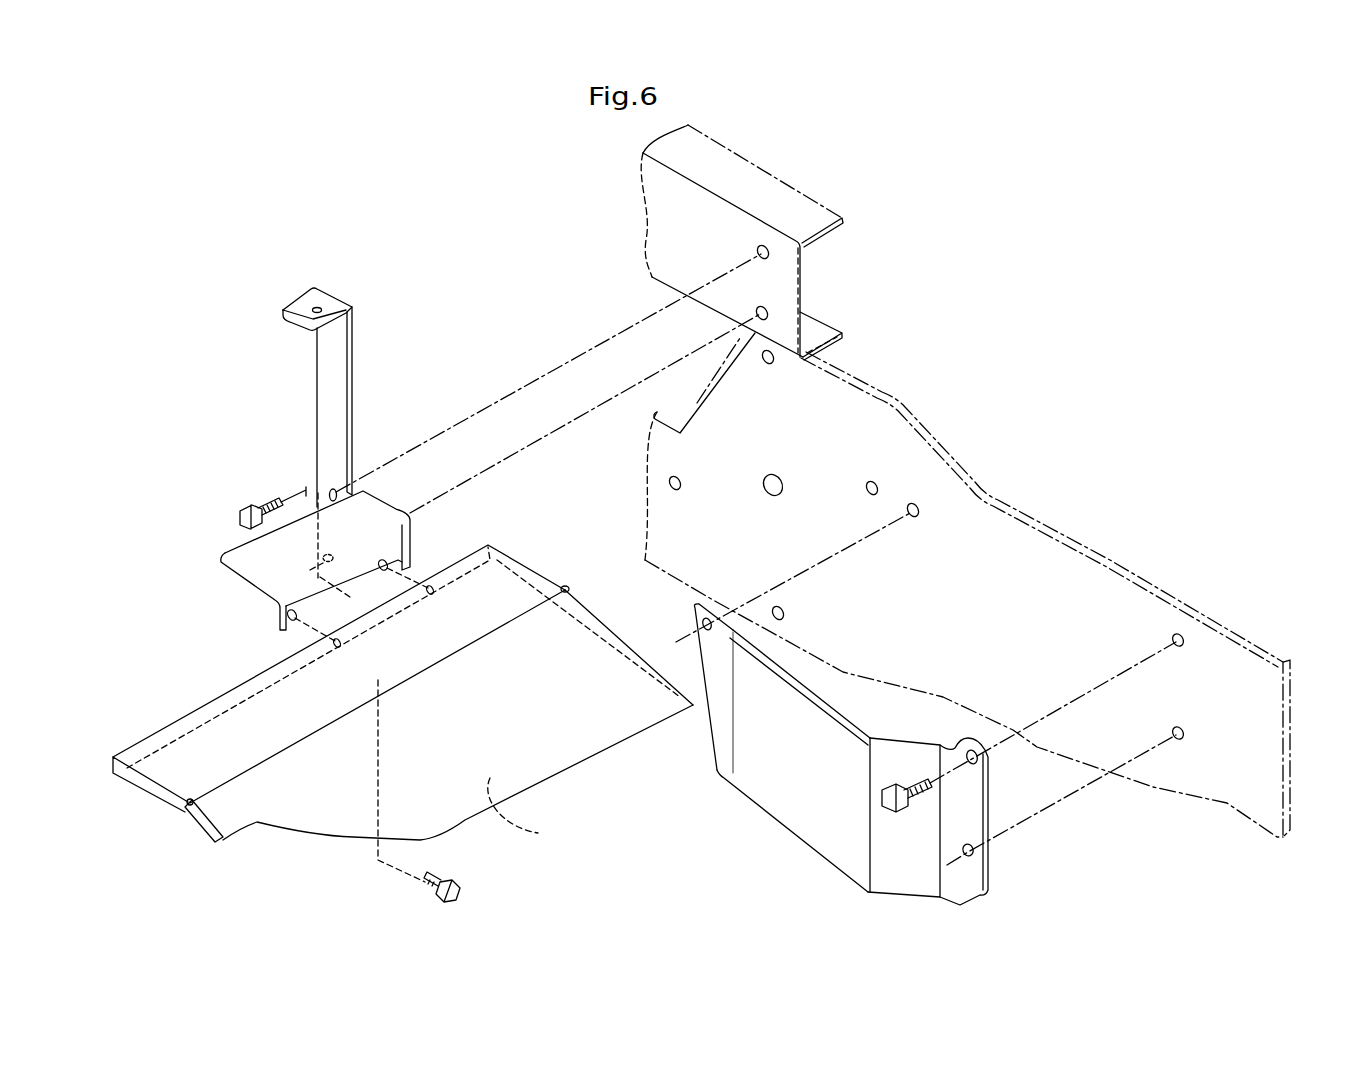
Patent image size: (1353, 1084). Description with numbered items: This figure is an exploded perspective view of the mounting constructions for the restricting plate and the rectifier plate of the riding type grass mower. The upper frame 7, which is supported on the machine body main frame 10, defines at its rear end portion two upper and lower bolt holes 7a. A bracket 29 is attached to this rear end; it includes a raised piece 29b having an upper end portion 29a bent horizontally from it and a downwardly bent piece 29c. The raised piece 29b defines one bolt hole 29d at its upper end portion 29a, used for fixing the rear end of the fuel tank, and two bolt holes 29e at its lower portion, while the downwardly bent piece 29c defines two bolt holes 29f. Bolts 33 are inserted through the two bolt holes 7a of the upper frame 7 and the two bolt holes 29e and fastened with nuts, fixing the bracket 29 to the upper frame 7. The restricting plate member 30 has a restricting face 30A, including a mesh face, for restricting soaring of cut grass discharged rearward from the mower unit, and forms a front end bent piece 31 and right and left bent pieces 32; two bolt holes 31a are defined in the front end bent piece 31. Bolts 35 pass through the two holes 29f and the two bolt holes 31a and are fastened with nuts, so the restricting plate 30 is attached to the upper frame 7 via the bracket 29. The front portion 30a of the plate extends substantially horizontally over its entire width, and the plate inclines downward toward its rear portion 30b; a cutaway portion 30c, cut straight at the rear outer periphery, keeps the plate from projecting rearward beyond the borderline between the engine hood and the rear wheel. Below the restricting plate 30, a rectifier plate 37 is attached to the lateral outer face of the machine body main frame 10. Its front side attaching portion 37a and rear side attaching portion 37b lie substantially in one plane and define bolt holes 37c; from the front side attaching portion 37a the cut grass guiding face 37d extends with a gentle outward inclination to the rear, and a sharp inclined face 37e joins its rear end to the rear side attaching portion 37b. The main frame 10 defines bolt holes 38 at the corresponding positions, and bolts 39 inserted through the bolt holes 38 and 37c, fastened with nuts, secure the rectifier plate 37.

The upper frame 7 is at (757, 242).
The bolt holes 7a is at (759, 258).
The machine body main frame 10 is at (1048, 520).
The bracket 29 is at (448, 456).
The upper end portion 29a is at (302, 300).
The raised piece 29b is at (323, 388).
The downwardly bent piece 29c is at (357, 580).
The bolt hole 29d is at (322, 306).
The bolt holes 29e is at (329, 490).
The bolt holes 29f is at (388, 564).
The restricting plate member 30 is at (391, 734).
The front portion 30a is at (182, 758).
The rear portion 30b is at (553, 745).
The cutaway portion 30c is at (307, 833).
The restricting face 30A is at (540, 815).
The front end bent piece 31 is at (247, 700).
The bolt holes 31a is at (440, 592).
The bent pieces 32 is at (196, 820).
The bolts 33 is at (240, 516).
The bolts 35 is at (460, 890).
The rectifier plate 37 is at (833, 763).
The front side attaching portion 37a is at (718, 713).
The rear side attaching portion 37b is at (972, 880).
The bolt holes 37c is at (703, 625).
The cut grass guiding face 37d is at (790, 800).
The sharp inclined face 37e is at (900, 873).
The bolt holes 38 is at (910, 520).
The bolts 39 is at (883, 800).